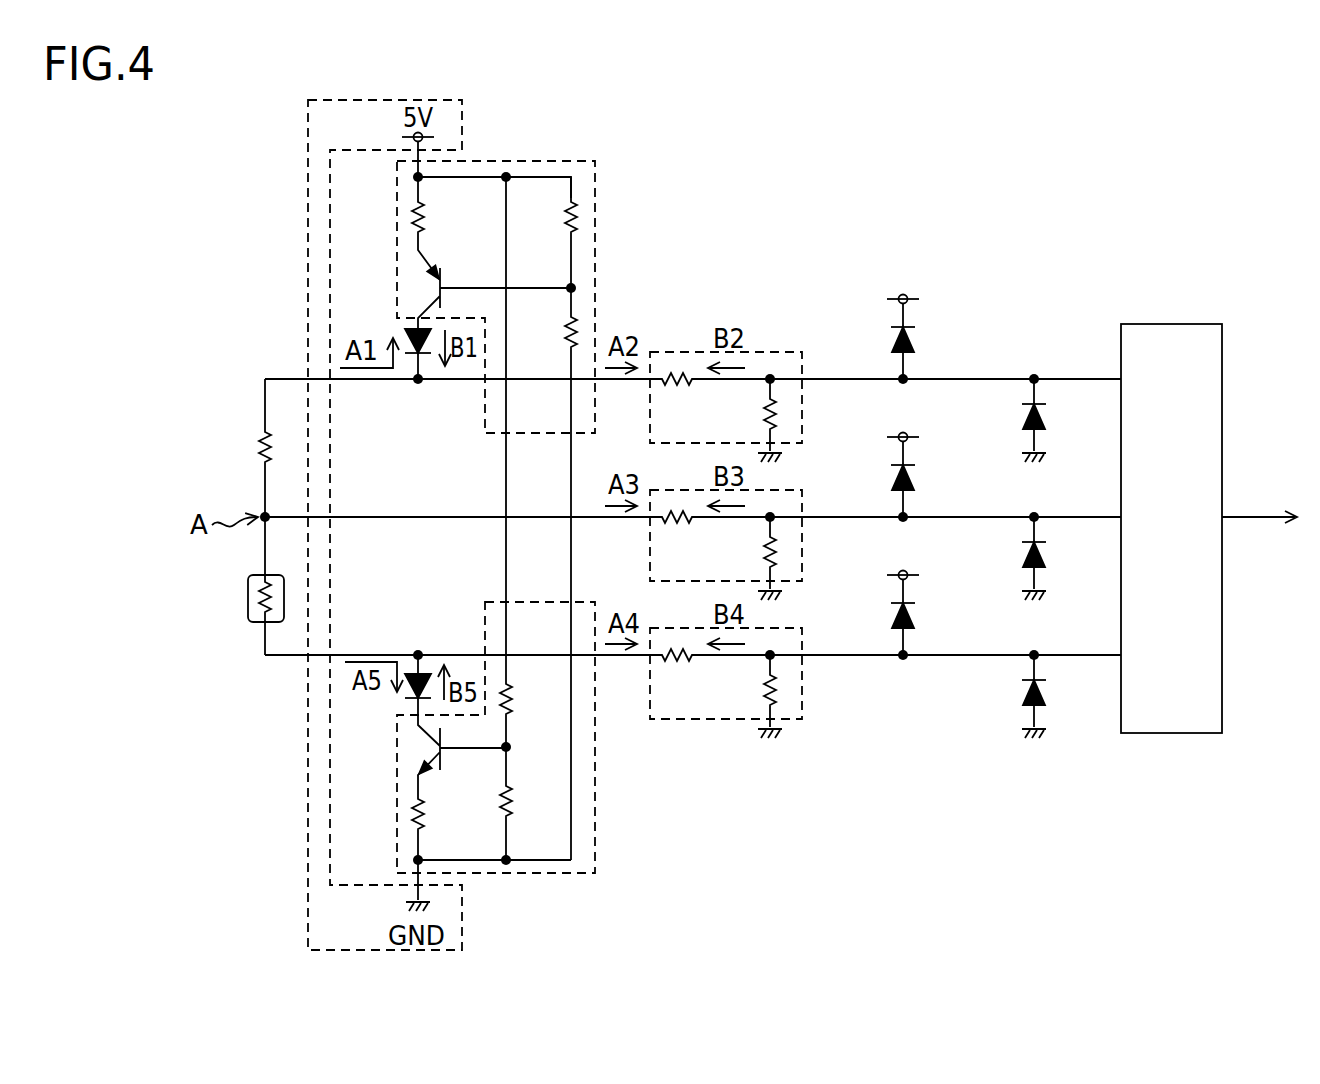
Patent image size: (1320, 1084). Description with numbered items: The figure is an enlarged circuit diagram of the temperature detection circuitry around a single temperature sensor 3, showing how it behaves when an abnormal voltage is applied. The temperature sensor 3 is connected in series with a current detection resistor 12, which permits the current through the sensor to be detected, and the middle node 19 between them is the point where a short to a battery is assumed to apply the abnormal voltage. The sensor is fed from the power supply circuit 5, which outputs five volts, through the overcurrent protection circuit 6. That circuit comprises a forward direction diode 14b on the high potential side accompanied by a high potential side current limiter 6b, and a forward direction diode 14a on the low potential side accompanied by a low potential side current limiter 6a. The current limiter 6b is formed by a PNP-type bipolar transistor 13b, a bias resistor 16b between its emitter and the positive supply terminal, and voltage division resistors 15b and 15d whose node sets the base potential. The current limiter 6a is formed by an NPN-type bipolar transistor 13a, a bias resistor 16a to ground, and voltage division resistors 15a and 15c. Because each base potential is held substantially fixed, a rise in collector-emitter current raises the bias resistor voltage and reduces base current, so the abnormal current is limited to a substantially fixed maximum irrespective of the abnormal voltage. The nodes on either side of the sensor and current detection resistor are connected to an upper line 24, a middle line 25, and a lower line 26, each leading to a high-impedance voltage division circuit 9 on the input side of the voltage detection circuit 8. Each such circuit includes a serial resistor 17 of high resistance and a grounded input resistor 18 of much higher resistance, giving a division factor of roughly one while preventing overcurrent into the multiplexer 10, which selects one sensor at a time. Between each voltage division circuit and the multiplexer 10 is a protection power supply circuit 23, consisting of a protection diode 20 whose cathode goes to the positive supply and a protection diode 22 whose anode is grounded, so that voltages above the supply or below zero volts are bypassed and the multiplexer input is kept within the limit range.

The temperature sensor 3 is at (248, 598).
The power supply circuit 5 is at (308, 222).
The overcurrent protection circuit 6 is at (506, 143).
The low potential side current limiter 6a is at (543, 874).
The high potential side current limiter 6b is at (568, 161).
The voltage detection circuit 8 is at (836, 155).
The high-impedance voltage division circuit 9 is at (804, 398).
The multiplexer 10 is at (1223, 358).
The current detection resistor 12 is at (259, 441).
The NPN-type bipolar transistor 13a is at (434, 774).
The PNP-type bipolar transistor 13b is at (434, 258).
The forward direction diode 14a is at (408, 697).
The forward direction diode 14b is at (407, 336).
The voltage division resistor 15a is at (506, 800).
The voltage division resistor 15b is at (571, 227).
The voltage division resistor 15c is at (508, 696).
The voltage division resistor 15d is at (571, 344).
The bias resistor 16a is at (412, 820).
The bias resistor 16b is at (412, 220).
The serial resistor 17 is at (676, 367).
The input resistor 18 is at (775, 420).
The middle node 19 is at (259, 512).
The protection diode 20 is at (893, 338).
The protection diode 22 is at (1047, 420).
The protection power supply circuit 23 is at (915, 446).
The upper line 24 is at (618, 381).
The middle line 25 is at (618, 519).
The lower line 26 is at (618, 657).